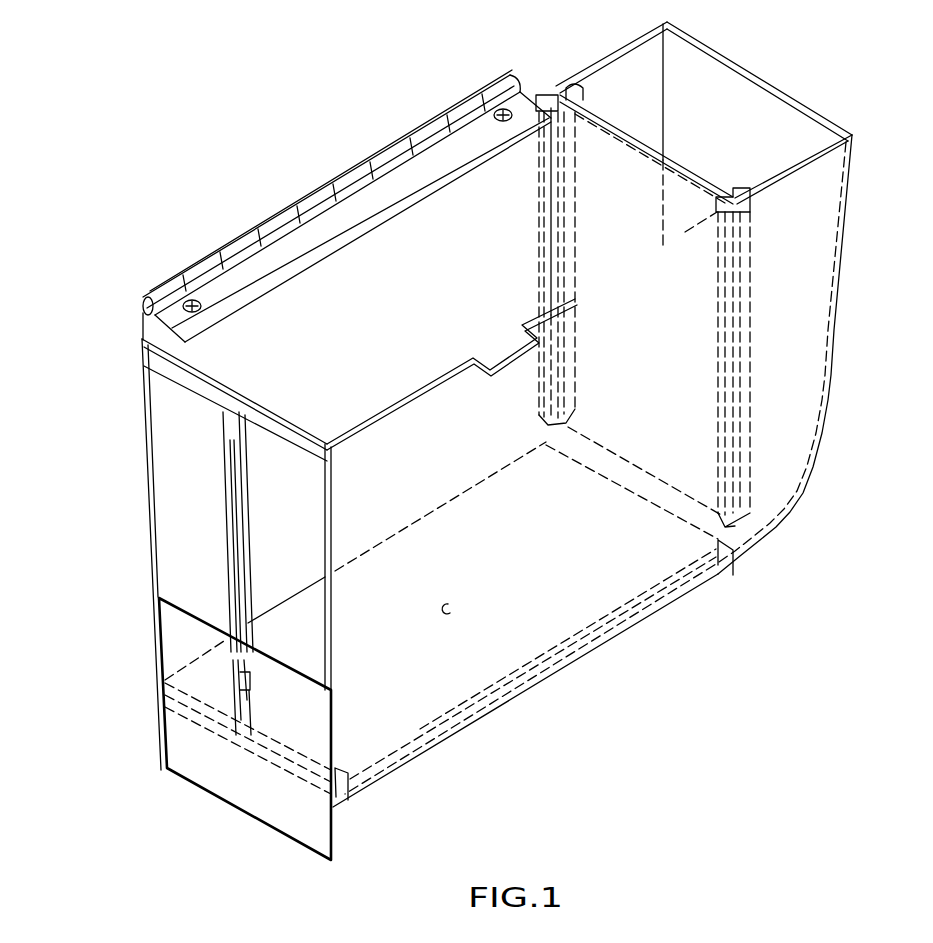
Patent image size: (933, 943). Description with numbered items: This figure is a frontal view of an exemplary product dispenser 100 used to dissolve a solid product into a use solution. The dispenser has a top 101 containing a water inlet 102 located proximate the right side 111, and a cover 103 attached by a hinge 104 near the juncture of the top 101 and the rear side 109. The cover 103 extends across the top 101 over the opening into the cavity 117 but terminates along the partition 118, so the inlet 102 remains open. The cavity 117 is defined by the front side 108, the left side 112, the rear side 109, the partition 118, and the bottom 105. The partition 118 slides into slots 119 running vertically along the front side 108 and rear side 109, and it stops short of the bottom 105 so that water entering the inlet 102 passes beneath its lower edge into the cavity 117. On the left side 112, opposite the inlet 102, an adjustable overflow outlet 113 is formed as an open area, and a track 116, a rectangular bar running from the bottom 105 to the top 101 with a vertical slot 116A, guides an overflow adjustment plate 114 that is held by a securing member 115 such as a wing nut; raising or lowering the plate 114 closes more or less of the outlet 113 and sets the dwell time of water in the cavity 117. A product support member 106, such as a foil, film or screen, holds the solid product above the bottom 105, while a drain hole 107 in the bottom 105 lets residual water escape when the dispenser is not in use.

The product dispenser 100 is at (150, 262).
The top 101 is at (572, 80).
The water inlet 102 is at (735, 105).
The cover 103 is at (248, 358).
The hinge 104 is at (346, 172).
The bottom 105 is at (478, 719).
The product support member 106 is at (530, 620).
The drain hole 107 is at (448, 600).
The front side 108 is at (823, 240).
The rear side 109 is at (455, 220).
The right side 111 is at (830, 103).
The left side 112 is at (195, 723).
The adjustable overflow outlet 113 is at (157, 515).
The overflow adjustment plate 114 is at (190, 780).
The securing member 115 is at (242, 683).
The track 116 is at (227, 560).
The slot 116A is at (283, 503).
The cavity 117 is at (673, 447).
The partition 118 is at (677, 160).
The slots 119 is at (563, 198).